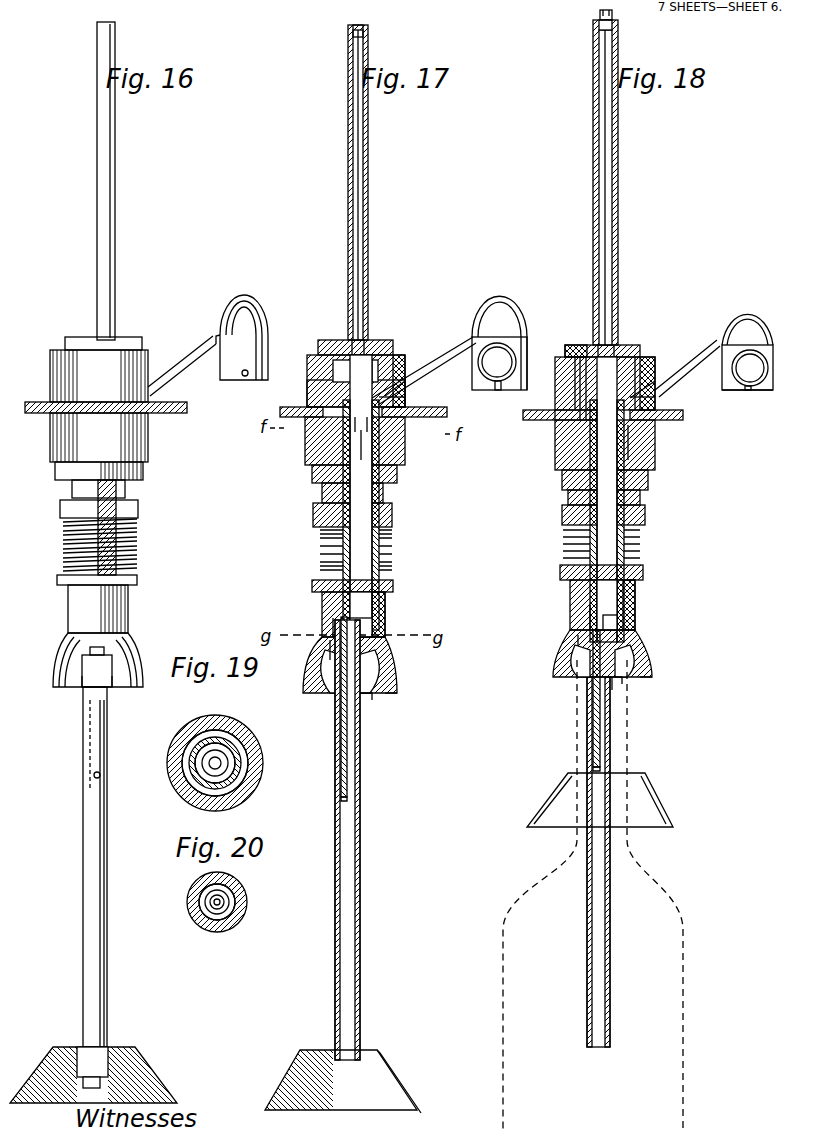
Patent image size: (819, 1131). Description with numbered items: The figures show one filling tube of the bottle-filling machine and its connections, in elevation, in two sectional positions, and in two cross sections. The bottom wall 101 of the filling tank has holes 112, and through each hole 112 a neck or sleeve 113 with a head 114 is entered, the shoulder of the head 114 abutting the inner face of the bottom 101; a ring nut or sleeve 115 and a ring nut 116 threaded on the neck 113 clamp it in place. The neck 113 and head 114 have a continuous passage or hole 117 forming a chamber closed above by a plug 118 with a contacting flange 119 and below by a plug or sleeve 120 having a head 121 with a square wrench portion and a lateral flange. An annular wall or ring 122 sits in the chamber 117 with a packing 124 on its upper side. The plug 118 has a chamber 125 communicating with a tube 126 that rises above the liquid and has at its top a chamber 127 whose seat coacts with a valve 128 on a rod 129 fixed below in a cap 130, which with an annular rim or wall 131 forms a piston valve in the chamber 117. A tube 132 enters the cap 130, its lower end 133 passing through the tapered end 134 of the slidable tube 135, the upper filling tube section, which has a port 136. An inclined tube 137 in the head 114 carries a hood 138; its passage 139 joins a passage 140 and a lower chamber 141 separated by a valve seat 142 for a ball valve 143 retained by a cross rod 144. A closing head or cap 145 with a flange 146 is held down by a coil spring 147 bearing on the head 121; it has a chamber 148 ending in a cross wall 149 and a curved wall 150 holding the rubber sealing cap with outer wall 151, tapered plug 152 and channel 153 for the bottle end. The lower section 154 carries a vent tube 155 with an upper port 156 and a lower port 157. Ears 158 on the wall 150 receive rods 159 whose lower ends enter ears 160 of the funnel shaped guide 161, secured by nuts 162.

In FIG. 16, the bottom wall 101 is at (178, 413).
In FIG. 17, the bottom wall 101 is at (440, 420).
In FIG. 18, the bottom wall 101 is at (683, 420).
In FIG. 17, the hole 112 is at (400, 404).
In FIG. 18, the hole 112 is at (650, 401).
In FIG. 16, the neck or sleeve 113 is at (125, 488).
In FIG. 17, the neck or sleeve 113 is at (400, 452).
In FIG. 18, the neck or sleeve 113 is at (638, 448).
In FIG. 19, the neck or sleeve 113 is at (236, 762).
In FIG. 16, the head 114 is at (99, 376).
In FIG. 17, the head 114 is at (312, 381).
In FIG. 18, the head 114 is at (652, 357).
In FIG. 16, the ring nut or sleeve 115 is at (99, 437).
In FIG. 17, the ring nut or sleeve 115 is at (320, 447).
In FIG. 18, the ring nut or sleeve 115 is at (560, 465).
In FIG. 19, the ring nut or sleeve 115 is at (248, 750).
In FIG. 16, the ring nut 116 is at (58, 470).
In FIG. 17, the ring nut 116 is at (318, 472).
In FIG. 18, the ring nut 116 is at (563, 483).
In FIG. 17, the passage or hole 117 is at (312, 355).
In FIG. 18, the passage or hole 117 is at (578, 409).
In FIG. 18, the plug 118 is at (580, 347).
In FIG. 16, the contacting flange 119 is at (68, 340).
In FIG. 17, the contacting flange 119 is at (323, 343).
In FIG. 18, the contacting flange 119 is at (642, 350).
In FIG. 16, the plug or sleeve 120 is at (75, 490).
In FIG. 17, the plug or sleeve 120 is at (322, 492).
In FIG. 18, the plug or sleeve 120 is at (568, 501).
In FIG. 16, the head 121 is at (75, 505).
In FIG. 17, the head 121 is at (320, 525).
In FIG. 17, the annular wall or ring 122 is at (343, 436).
In FIG. 19, the annular wall or ring 122 is at (224, 780).
In FIG. 18, the packing 124 is at (570, 416).
In FIG. 17, the chamber 125 is at (345, 360).
In FIG. 16, the tube 126 is at (112, 197).
In FIG. 17, the tube 126 is at (368, 233).
In FIG. 18, the tube 126 is at (613, 284).
In FIG. 18, the chamber 127 is at (615, 41).
In FIG. 17, the valve 128 is at (370, 33).
In FIG. 18, the valve 128 is at (600, 22).
In FIG. 17, the rod 129 is at (362, 191).
In FIG. 18, the rod 129 is at (608, 158).
In FIG. 17, the cap 130 is at (366, 352).
In FIG. 18, the cap 130 is at (624, 358).
In FIG. 17, the annular rim or wall 131 is at (405, 357).
In FIG. 18, the annular rim or wall 131 is at (652, 378).
In FIG. 17, the tube 132 is at (335, 695).
In FIG. 18, the tube 132 is at (565, 536).
In FIG. 19, the tube 132 is at (191, 728).
In FIG. 17, the lower end 133 is at (323, 607).
In FIG. 18, the lower end 133 is at (570, 599).
In FIG. 17, the tapered end 134 is at (387, 631).
In FIG. 18, the tapered end 134 is at (572, 616).
In FIG. 16, the slidable tube 135 is at (80, 530).
In FIG. 17, the slidable tube 135 is at (395, 541).
In FIG. 18, the slidable tube 135 is at (566, 521).
In FIG. 19, the slidable tube 135 is at (229, 743).
In FIG. 17, the opening or port 136 is at (380, 433).
In FIG. 18, the opening or port 136 is at (640, 433).
In FIG. 19, the opening or port 136 is at (230, 772).
In FIG. 16, the tube 137 is at (185, 355).
In FIG. 17, the tube 137 is at (425, 379).
In FIG. 18, the tube 137 is at (676, 380).
In FIG. 16, the hood 138 is at (242, 337).
In FIG. 18, the hood 138 is at (768, 368).
In FIG. 17, the passage 139 is at (438, 353).
In FIG. 18, the passage 139 is at (713, 340).
In FIG. 17, the passage 140 is at (499, 343).
In FIG. 18, the passage 140 is at (747, 329).
In FIG. 17, the lower chamber 141 is at (478, 390).
In FIG. 18, the lower chamber 141 is at (760, 390).
In FIG. 18, the valve seat 142 is at (773, 351).
In FIG. 17, the ball valve 143 is at (497, 362).
In FIG. 18, the ball valve 143 is at (760, 372).
In FIG. 16, the cross rod 144 is at (245, 377).
In FIG. 17, the cross rod 144 is at (499, 390).
In FIG. 18, the cross rod 144 is at (745, 390).
In FIG. 16, the closing head or cap 145 is at (100, 608).
In FIG. 17, the closing head or cap 145 is at (385, 617).
In FIG. 18, the closing head or cap 145 is at (646, 605).
In FIG. 20, the closing head or cap 145 is at (236, 910).
In FIG. 16, the flange 146 is at (137, 580).
In FIG. 17, the flange 146 is at (395, 586).
In FIG. 18, the flange 146 is at (645, 573).
In FIG. 16, the coil spring 147 is at (118, 547).
In FIG. 17, the coil spring 147 is at (374, 550).
In FIG. 18, the coil spring 147 is at (618, 544).
In FIG. 17, the chamber 148 is at (333, 630).
In FIG. 18, the chamber 148 is at (624, 624).
In FIG. 20, the chamber 148 is at (243, 893).
In FIG. 18, the cross wall 149 is at (636, 637).
In FIG. 16, the curved wall 150 is at (116, 659).
In FIG. 17, the curved wall 150 is at (315, 681).
In FIG. 18, the curved wall 150 is at (593, 714).
In FIG. 17, the body or outer wall 151 is at (393, 693).
In FIG. 18, the body or outer wall 151 is at (633, 680).
In FIG. 16, the tapered plug 152 is at (110, 690).
In FIG. 18, the tapered plug 152 is at (613, 688).
In FIG. 17, the channel 153 is at (372, 698).
In FIG. 18, the channel 153 is at (617, 683).
In FIG. 16, the lower section 154 is at (83, 833).
In FIG. 17, the lower section 154 is at (360, 833).
In FIG. 18, the lower section 154 is at (610, 906).
In FIG. 20, the lower section 154 is at (230, 915).
In FIG. 17, the vent tube 155 is at (342, 726).
In FIG. 20, the vent tube 155 is at (202, 885).
In FIG. 17, the port or mouth 156 is at (330, 652).
In FIG. 18, the port or mouth 156 is at (576, 641).
In FIG. 20, the port or mouth 156 is at (208, 912).
In FIG. 16, the port or mouth 157 is at (94, 776).
In FIG. 17, the port or mouth 157 is at (338, 791).
In FIG. 18, the port or mouth 157 is at (590, 767).
In FIG. 16, the ears 158 is at (88, 680).
In FIG. 16, the rod 159 is at (95, 735).
In FIG. 16, the ear 160 is at (90, 1058).
In FIG. 16, the funnel shaped guide 161 is at (128, 1070).
In FIG. 17, the funnel shaped guide 161 is at (343, 1081).
In FIG. 18, the funnel shaped guide 161 is at (609, 800).
In FIG. 16, the nuts 162 is at (100, 1080).